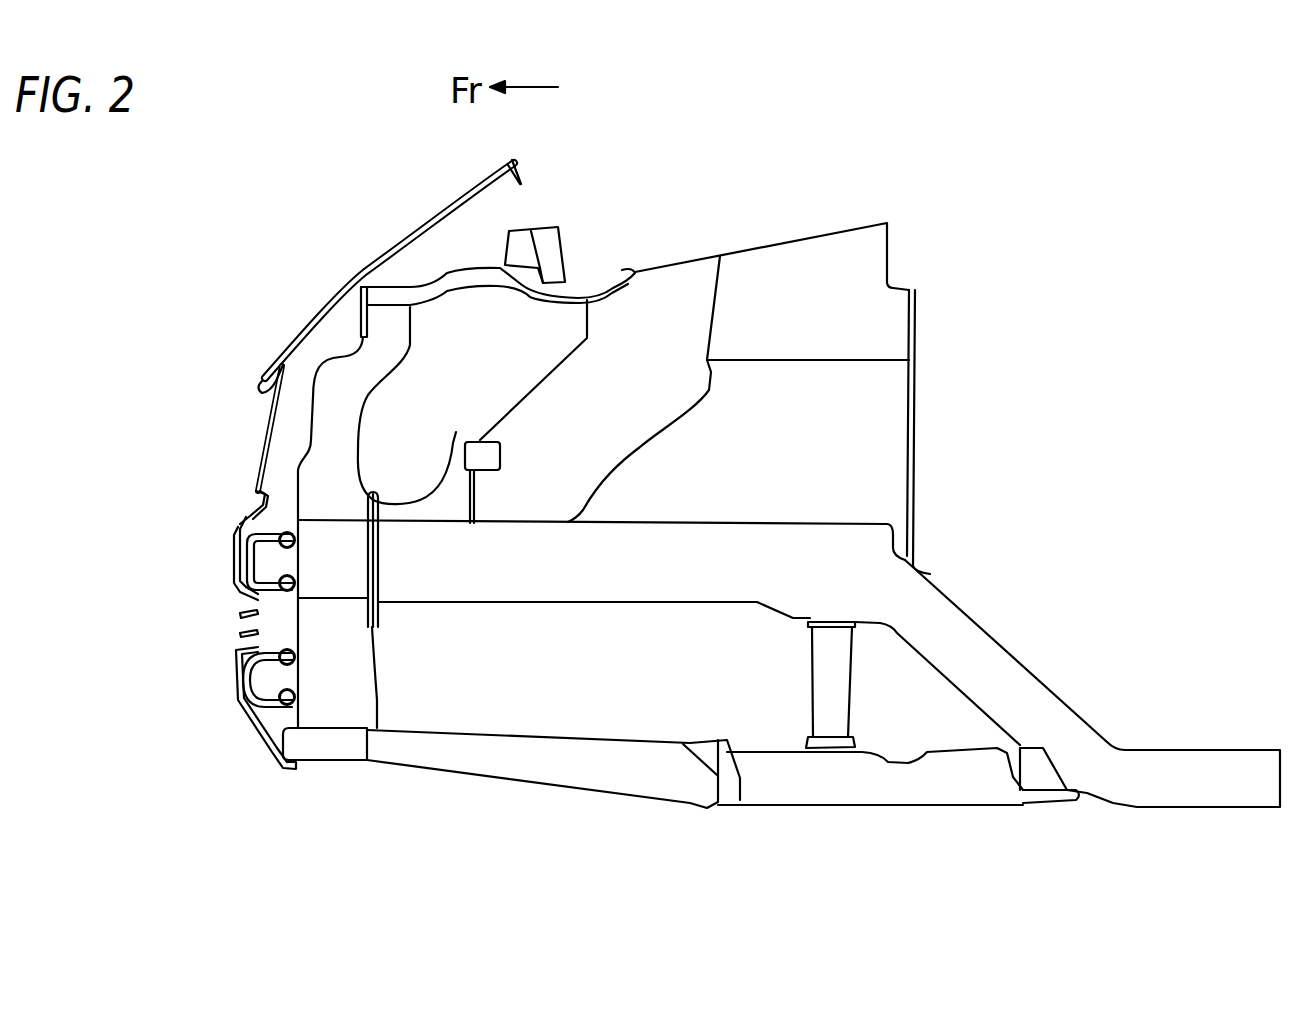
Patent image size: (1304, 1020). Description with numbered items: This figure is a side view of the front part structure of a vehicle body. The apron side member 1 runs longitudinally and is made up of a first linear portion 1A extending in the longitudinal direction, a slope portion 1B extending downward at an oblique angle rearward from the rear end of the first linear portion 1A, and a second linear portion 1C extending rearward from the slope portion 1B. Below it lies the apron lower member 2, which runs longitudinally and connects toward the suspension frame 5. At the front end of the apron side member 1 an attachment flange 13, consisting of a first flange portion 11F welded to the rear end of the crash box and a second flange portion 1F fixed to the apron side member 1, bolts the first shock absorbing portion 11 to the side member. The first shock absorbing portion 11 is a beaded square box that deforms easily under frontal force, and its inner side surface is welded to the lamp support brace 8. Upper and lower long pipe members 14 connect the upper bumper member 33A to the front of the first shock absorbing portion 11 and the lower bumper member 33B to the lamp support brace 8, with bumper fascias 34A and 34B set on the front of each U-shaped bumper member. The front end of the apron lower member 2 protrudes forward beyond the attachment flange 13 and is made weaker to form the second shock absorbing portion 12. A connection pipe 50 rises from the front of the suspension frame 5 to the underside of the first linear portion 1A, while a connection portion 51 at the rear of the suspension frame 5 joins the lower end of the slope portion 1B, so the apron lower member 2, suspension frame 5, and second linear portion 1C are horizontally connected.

The apron side member 1 is at (797, 663).
The first linear portion 1A is at (519, 603).
The slope portion 1B is at (975, 632).
The second linear portion 1C is at (1203, 757).
The apron lower member 2 is at (540, 773).
The suspension frame 5 is at (873, 803).
The lamp support brace 8 is at (363, 685).
The first shock absorbing portion 11 is at (357, 562).
The first flange portion 11F is at (365, 490).
The second shock absorbing portion 12 is at (333, 762).
The attachment flange 13 is at (482, 400).
The long pipe members 14 is at (296, 578).
The second flange portion 1F is at (449, 462).
The upper bumper member 33A is at (250, 520).
The lower bumper member 33B is at (230, 627).
The bumper fascia 34A is at (230, 563).
The bumper fascia 34B is at (230, 677).
The connection pipe 50 is at (817, 670).
The connection portion 51 is at (1055, 797).